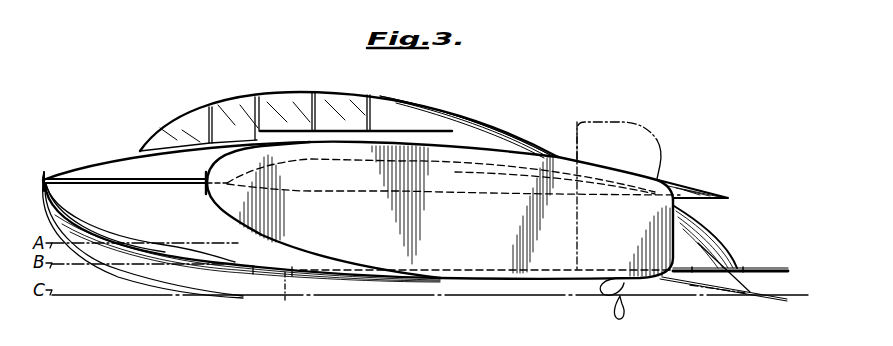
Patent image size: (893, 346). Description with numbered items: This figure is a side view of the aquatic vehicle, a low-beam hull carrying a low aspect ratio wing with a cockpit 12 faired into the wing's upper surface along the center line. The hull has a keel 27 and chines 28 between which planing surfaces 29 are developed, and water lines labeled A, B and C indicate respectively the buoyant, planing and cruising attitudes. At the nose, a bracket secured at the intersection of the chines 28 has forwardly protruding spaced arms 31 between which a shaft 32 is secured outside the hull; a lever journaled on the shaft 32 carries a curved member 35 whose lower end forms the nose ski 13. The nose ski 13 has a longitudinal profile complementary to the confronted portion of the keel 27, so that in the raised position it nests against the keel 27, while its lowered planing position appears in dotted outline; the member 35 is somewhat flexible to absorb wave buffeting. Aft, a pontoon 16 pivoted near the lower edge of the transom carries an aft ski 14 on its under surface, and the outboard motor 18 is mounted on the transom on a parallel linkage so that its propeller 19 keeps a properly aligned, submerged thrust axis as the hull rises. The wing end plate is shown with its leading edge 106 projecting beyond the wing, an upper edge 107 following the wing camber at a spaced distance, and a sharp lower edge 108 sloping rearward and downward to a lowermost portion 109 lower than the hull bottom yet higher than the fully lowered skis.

The cockpit 12 is at (292, 92).
The nose ski 13 is at (177, 284).
The aft ski 14 is at (751, 269).
The pontoon 16 is at (716, 251).
The outboard motor 18 is at (658, 151).
The propeller 19 is at (626, 315).
The keel 27 is at (296, 269).
The chine 28 is at (150, 244).
The planing surface 29 is at (258, 269).
The forwardly protruding spaced arm 31 is at (54, 158).
The shaft 32 is at (54, 188).
The curved member 35 is at (87, 214).
The leading edge of end plate 106 is at (206, 176).
The upper edge of end plate 107 is at (487, 147).
The lower edge of end plate 108 is at (313, 252).
The lowermost portion of end plate 109 is at (524, 280).